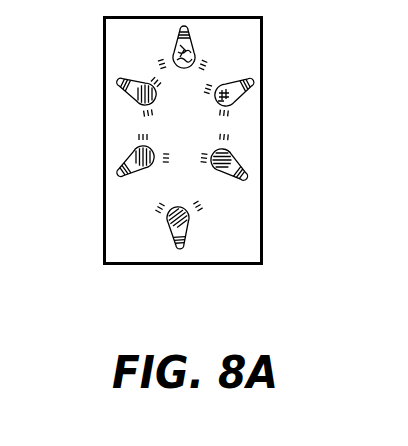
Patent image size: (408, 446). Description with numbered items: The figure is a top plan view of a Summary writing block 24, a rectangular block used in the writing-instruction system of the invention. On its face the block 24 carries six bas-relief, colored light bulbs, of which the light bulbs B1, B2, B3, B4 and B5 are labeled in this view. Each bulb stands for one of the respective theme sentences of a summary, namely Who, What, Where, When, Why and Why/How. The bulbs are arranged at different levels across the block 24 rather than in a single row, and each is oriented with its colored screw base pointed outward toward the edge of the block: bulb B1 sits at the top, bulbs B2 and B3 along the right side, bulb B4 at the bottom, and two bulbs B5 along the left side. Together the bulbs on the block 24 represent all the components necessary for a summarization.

The Summary block 24 is at (262, 262).
The light bulb B1 is at (205, 45).
The light bulb B2 is at (250, 97).
The light bulb B3 is at (248, 165).
The light bulb B4 is at (152, 224).
The light bulb B5 is at (114, 85).